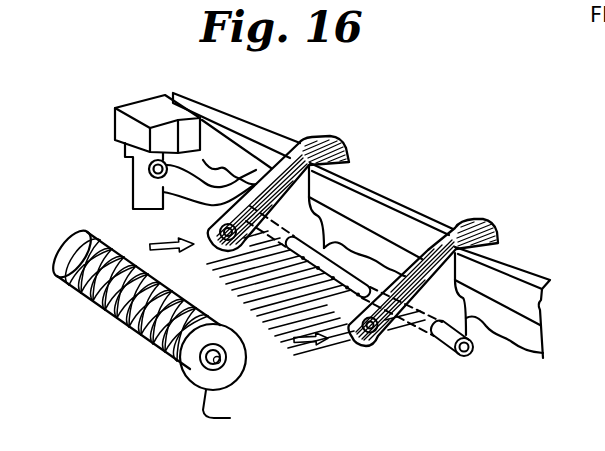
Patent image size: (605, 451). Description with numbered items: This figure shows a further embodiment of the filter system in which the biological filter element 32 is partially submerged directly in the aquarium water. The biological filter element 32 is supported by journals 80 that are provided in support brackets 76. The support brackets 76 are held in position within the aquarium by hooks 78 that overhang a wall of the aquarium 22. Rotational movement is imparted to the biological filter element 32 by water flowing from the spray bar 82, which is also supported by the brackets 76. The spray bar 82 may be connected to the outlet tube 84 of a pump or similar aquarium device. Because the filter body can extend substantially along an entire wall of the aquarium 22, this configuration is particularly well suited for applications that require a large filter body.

The aquarium 22 is at (532, 278).
The biological filter element 32 is at (152, 325).
The support brackets 76 is at (309, 157).
The hooks 78 is at (352, 162).
The journals 80 is at (227, 242).
The spray bar 82 is at (354, 268).
The outlet tube 84 is at (213, 183).